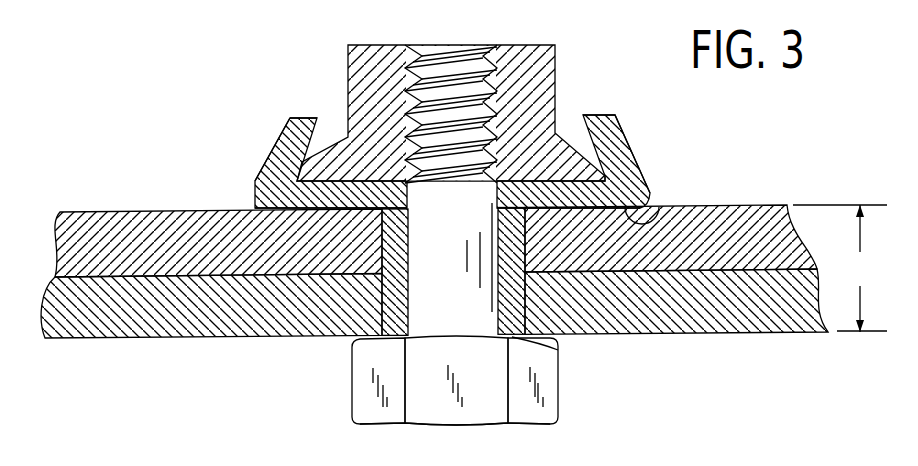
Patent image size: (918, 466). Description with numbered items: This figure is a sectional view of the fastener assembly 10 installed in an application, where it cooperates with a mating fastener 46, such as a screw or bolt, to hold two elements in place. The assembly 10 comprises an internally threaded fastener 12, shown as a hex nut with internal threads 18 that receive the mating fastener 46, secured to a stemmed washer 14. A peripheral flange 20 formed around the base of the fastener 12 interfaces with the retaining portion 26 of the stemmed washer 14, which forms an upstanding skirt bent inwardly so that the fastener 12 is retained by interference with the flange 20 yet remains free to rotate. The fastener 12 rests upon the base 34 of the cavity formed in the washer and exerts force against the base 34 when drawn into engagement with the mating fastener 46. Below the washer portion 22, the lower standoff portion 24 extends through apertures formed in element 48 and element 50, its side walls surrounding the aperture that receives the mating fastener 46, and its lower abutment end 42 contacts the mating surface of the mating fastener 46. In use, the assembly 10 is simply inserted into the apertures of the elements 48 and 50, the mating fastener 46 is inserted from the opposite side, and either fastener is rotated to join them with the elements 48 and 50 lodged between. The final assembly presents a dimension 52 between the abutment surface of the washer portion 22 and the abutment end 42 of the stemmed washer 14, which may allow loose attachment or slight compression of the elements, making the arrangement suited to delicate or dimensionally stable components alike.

The assembly 10 is at (290, 73).
The internally threaded fastener 12 is at (557, 47).
The stemmed washer 14 is at (655, 168).
The internal threads 18 is at (454, 44).
The peripheral flange 20 is at (594, 132).
The washer portion 22 is at (310, 194).
The lower standoff portion 24 is at (395, 322).
The retaining portion 26 is at (279, 137).
The base 34 is at (662, 207).
The lower abutment end 42 is at (513, 340).
The mating fastener 46 is at (395, 426).
The element 48 is at (60, 240).
The element 50 is at (62, 329).
The dimension 52 is at (840, 268).